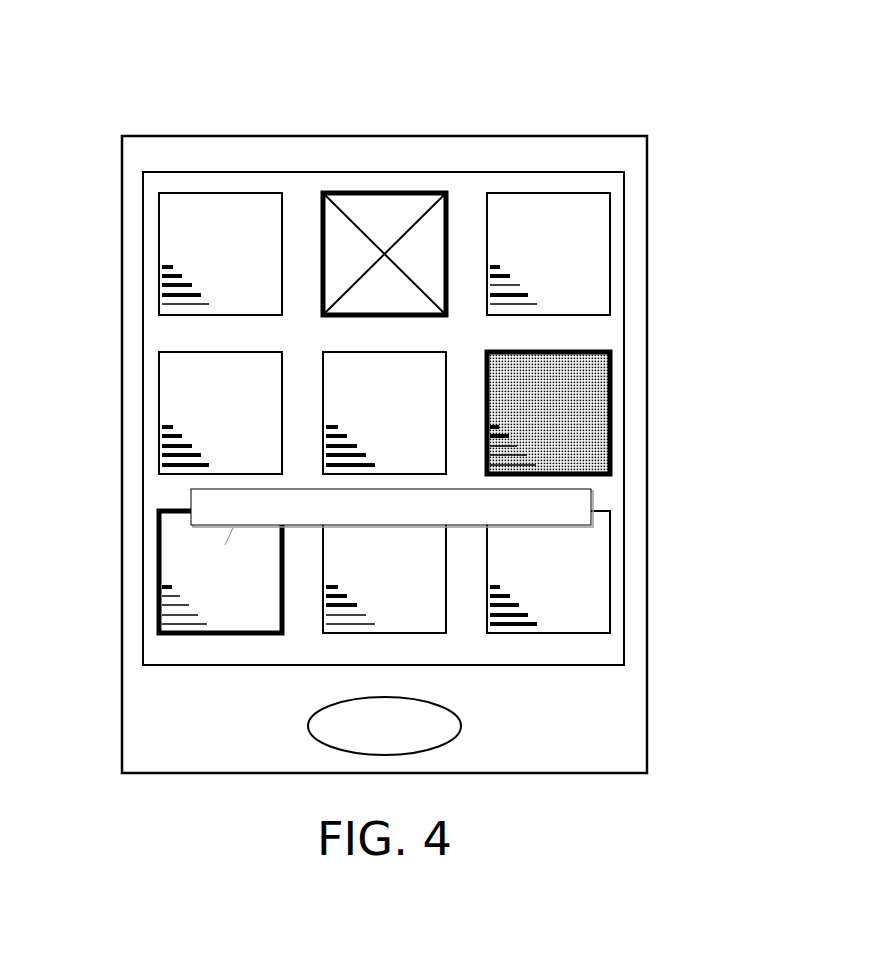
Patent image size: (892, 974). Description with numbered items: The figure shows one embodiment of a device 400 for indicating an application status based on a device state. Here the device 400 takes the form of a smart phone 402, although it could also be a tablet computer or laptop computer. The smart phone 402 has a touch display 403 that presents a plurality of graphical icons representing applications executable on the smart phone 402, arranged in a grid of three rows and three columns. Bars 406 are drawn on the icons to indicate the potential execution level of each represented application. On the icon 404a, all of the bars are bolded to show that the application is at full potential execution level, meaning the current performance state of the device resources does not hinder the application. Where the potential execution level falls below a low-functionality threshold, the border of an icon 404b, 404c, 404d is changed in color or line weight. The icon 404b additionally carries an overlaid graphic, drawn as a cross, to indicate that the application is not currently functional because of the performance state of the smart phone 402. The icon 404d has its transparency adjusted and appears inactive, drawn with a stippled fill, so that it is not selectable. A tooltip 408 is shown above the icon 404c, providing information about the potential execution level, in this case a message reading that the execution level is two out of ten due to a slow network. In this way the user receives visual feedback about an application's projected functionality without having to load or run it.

The device 400 is at (121, 117).
The smart phone 402 is at (122, 219).
The touch display 403 is at (143, 279).
The icon 404a is at (159, 366).
The icon 404b is at (381, 192).
The icon 404c is at (159, 561).
The icon 404d is at (612, 414).
The bars 406 is at (202, 575).
The tooltip 408 is at (191, 505).